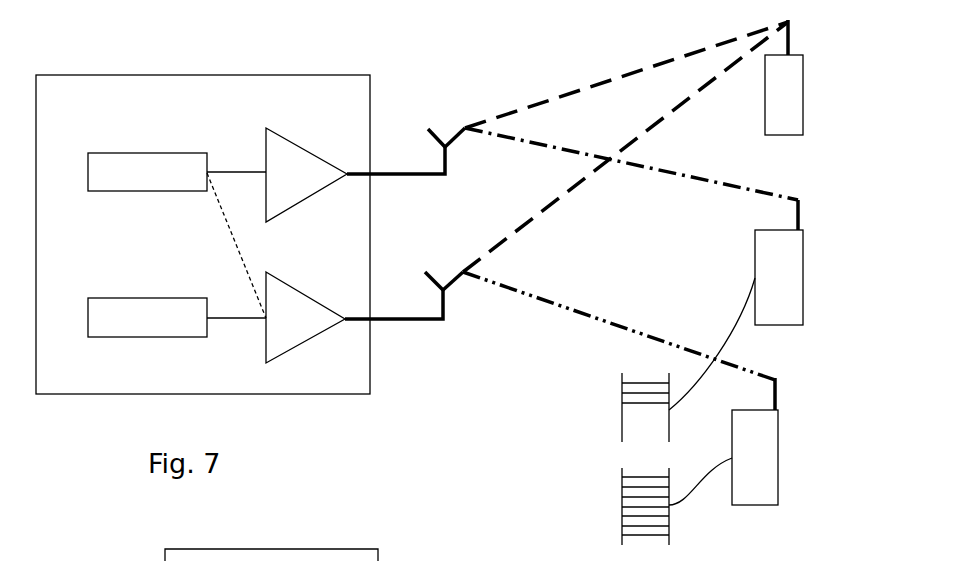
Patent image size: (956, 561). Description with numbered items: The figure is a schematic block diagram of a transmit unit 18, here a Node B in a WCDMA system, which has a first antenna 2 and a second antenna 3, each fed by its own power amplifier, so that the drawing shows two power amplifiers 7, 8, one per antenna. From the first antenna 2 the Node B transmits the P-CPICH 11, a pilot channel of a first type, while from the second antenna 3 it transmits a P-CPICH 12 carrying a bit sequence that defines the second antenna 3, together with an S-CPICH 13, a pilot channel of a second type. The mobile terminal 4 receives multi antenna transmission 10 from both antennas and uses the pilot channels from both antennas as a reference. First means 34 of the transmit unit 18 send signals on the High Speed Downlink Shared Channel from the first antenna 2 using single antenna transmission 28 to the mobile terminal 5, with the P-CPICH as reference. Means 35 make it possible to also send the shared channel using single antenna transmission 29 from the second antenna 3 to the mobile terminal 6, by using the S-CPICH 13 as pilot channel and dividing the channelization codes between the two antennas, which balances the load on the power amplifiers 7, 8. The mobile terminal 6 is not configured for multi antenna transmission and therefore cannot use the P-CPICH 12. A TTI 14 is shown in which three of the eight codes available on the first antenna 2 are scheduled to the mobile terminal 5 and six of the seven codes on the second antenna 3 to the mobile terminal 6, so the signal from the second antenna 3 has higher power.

The transmit unit 18 is at (63, 75).
The first means 34 is at (147, 172).
The means 35 is at (147, 317).
The power amplifier 7 is at (315, 152).
The power amplifier 8 is at (305, 290).
The P-CPICH 11 is at (388, 157).
The P-CPICH 12 is at (373, 292).
The S-CPICH 13 is at (390, 355).
The first antenna 2 is at (412, 177).
The second antenna 3 is at (449, 308).
The multi antenna transmission 10 is at (622, 153).
The single antenna transmission 28 is at (682, 175).
The single antenna transmission 29 is at (611, 325).
The mobile terminal 4 is at (803, 92).
The mobile terminal 5 is at (803, 278).
The mobile terminal 6 is at (778, 458).
The TTI 14 is at (622, 408).